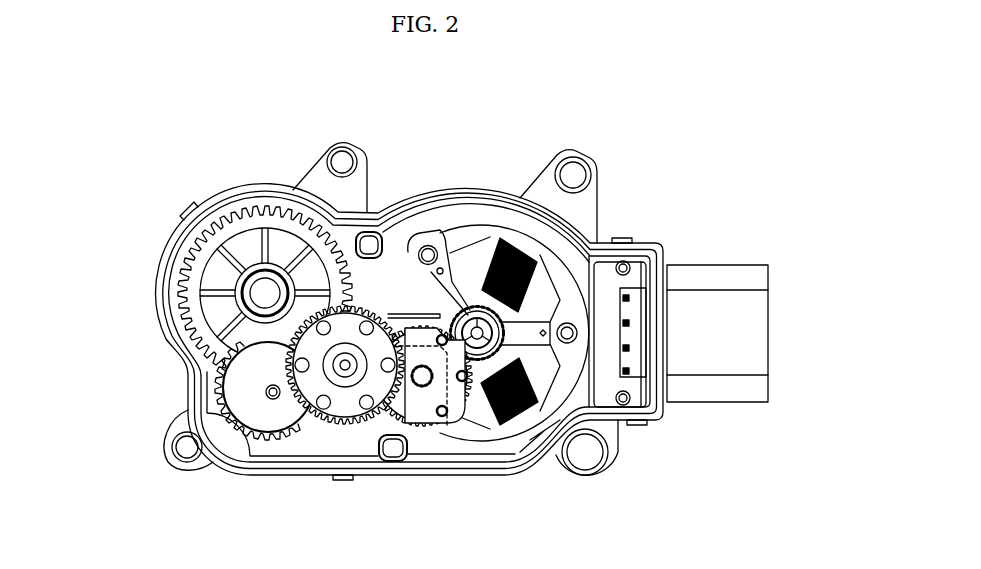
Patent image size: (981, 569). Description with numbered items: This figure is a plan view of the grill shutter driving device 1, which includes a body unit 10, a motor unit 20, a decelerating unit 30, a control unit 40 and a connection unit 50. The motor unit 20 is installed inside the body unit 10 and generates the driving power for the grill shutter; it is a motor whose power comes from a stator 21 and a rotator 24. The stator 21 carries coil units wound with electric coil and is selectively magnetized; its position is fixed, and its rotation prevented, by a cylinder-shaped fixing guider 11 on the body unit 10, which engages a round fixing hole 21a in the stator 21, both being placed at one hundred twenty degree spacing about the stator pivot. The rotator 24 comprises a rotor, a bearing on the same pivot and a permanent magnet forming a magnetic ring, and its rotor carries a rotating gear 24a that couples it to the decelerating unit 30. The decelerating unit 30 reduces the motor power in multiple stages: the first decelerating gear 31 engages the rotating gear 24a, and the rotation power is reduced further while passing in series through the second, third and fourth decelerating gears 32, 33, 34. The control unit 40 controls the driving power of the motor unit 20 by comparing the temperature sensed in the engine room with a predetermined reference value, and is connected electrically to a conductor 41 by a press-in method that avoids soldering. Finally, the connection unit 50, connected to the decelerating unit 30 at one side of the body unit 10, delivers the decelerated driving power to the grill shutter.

The grill shutter driving device 1 is at (421, 70).
The body unit 10 is at (162, 251).
The fixing guider 11 is at (428, 245).
The motor unit 20 is at (546, 337).
The stator 21 is at (521, 287).
The fixing hole 21a is at (442, 266).
The rotator 24 is at (535, 243).
The rotating gear 24a is at (466, 352).
The decelerating unit 30 is at (268, 371).
The first decelerating gear 31 is at (190, 410).
The second decelerating gear 32 is at (187, 360).
The third decelerating gear 33 is at (203, 383).
The fourth decelerating gear 34 is at (210, 303).
The control unit 40 is at (513, 462).
The conductor 41 is at (637, 297).
The connection unit 50 is at (248, 245).